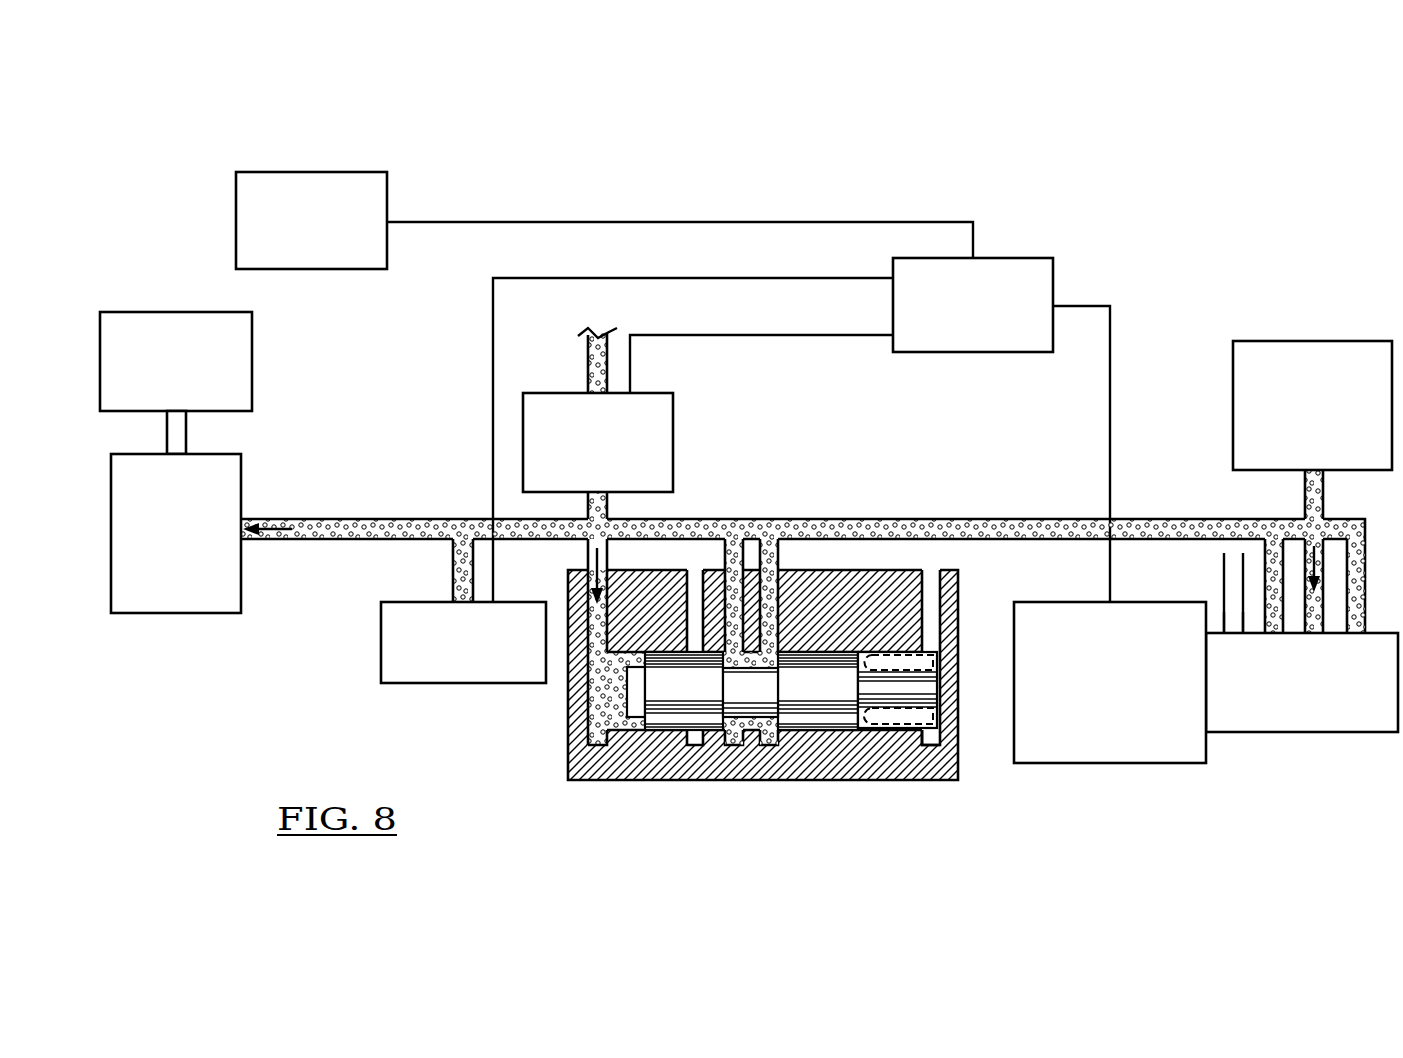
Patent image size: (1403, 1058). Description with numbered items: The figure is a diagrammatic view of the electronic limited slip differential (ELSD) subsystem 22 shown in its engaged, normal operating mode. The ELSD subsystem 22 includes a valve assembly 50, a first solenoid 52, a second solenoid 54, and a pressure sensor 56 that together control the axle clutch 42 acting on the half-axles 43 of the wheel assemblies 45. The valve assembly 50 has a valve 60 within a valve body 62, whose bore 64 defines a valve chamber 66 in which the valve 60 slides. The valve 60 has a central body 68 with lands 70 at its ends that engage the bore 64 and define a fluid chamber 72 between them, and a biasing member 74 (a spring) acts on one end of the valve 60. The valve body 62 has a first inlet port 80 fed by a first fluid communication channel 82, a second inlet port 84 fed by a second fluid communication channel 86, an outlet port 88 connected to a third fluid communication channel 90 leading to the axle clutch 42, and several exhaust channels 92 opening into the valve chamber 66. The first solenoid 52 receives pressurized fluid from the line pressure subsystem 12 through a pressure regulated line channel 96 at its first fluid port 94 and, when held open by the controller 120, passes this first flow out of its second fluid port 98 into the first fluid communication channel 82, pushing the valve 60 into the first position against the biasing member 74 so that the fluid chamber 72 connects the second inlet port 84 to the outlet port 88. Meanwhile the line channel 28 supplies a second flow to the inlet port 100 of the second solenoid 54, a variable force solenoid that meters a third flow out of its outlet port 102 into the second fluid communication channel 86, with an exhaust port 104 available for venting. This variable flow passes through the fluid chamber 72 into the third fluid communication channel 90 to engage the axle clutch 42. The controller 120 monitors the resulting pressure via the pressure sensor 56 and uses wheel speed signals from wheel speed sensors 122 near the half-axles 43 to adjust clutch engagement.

The line pressure subsystem 12 is at (1287, 341).
The ELSD subsystem 22 is at (1192, 202).
The line channel 28 is at (1305, 502).
The axle clutch 42 is at (191, 613).
The half-axles 43 is at (186, 437).
The wheel assemblies 45 is at (252, 364).
The valve assembly 50 is at (970, 606).
The first solenoid 52 is at (673, 422).
The second solenoid 54 is at (1113, 763).
The pressure sensor 56 is at (414, 683).
The valve 60 is at (819, 646).
The valve body 62 is at (888, 588).
The bore 64 is at (838, 652).
The valve chamber 66 is at (903, 652).
The central body 68 is at (758, 710).
The lands 70 is at (665, 720).
The fluid chamber 72 is at (733, 738).
The biasing member 74 is at (918, 733).
The first inlet port 80 is at (602, 655).
The first fluid communication channel 82 is at (592, 548).
The second inlet port 84 is at (825, 677).
The second fluid communication channel 86 is at (1037, 522).
The outlet port 88 is at (738, 652).
The third fluid communication channel 90 is at (680, 520).
The exhaust channels 92 is at (698, 652).
The first fluid port 94 is at (590, 380).
The pressure regulated line channel 96 is at (590, 363).
The second fluid port 98 is at (590, 508).
The inlet port 100 is at (1312, 636).
The outlet port 102 is at (1358, 633).
The exhaust port 104 is at (1235, 633).
The controller 120 is at (942, 352).
The wheel speed sensors 122 is at (297, 269).